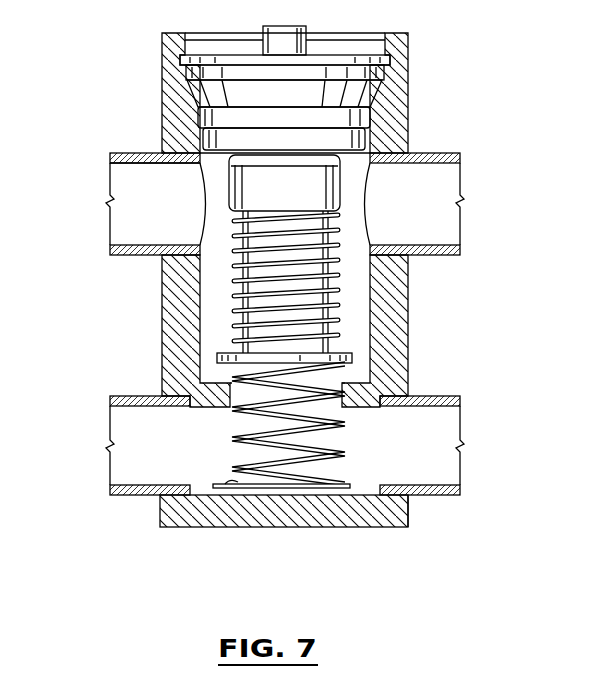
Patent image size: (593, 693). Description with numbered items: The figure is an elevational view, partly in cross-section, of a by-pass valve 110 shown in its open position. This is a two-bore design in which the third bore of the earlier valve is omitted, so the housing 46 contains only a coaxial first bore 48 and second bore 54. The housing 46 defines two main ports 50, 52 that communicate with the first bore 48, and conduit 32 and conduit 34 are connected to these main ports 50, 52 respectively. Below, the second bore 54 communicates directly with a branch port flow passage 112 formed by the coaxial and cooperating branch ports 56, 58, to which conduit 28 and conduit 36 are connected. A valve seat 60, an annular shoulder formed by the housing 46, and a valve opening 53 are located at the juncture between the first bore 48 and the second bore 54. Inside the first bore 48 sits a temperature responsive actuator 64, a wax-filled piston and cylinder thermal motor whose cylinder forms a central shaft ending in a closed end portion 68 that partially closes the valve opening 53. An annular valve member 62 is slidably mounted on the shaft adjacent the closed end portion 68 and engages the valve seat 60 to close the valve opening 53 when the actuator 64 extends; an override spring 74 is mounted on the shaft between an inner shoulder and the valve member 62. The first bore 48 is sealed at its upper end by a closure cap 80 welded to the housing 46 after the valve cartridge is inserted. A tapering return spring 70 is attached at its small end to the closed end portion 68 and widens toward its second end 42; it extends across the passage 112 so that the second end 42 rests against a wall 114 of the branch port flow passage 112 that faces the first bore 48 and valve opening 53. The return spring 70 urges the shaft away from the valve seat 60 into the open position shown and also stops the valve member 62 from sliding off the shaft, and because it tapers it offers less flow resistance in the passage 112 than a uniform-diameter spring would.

The by-pass valve 110 is at (491, 94).
The housing 46 is at (170, 80).
The closure cap 80 is at (353, 92).
The conduit 34 is at (130, 153).
The main port 52 is at (145, 242).
The conduit 32 is at (440, 152).
The main port 50 is at (408, 204).
The temperature responsive actuator 64 is at (237, 185).
The first bore 48 is at (210, 300).
The closed end portion 68 is at (370, 358).
The valve opening 53 is at (333, 400).
The override spring 74 is at (340, 313).
The valve member 62 is at (215, 356).
The second bore 54 is at (235, 378).
The valve seat 60 is at (385, 388).
The return spring 70 is at (290, 488).
The conduit 36 is at (113, 492).
The branch port 58 is at (163, 460).
The conduit 28 is at (460, 400).
The branch port flow passage 112 is at (207, 473).
The wall 114 is at (237, 490).
The second end 42 is at (360, 490).
The branch port 56 is at (400, 480).